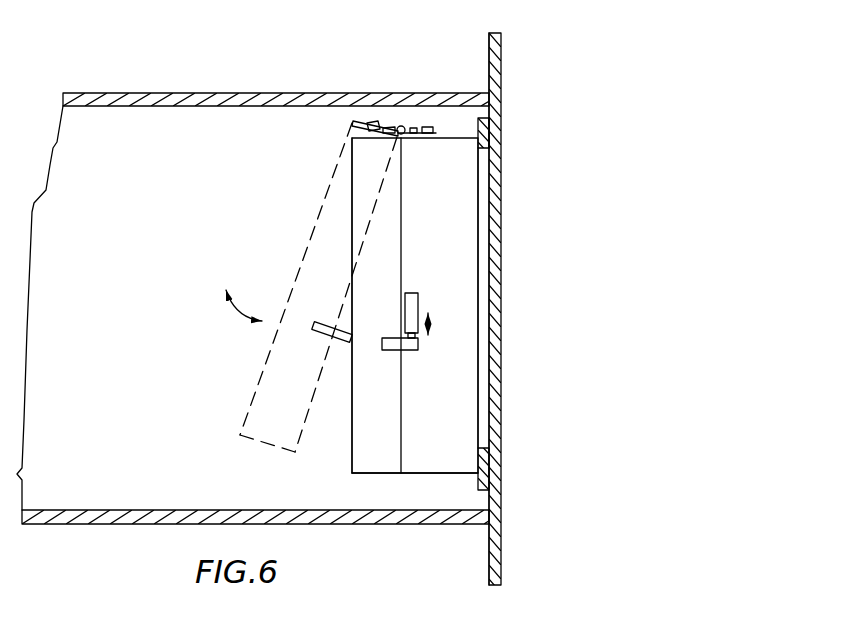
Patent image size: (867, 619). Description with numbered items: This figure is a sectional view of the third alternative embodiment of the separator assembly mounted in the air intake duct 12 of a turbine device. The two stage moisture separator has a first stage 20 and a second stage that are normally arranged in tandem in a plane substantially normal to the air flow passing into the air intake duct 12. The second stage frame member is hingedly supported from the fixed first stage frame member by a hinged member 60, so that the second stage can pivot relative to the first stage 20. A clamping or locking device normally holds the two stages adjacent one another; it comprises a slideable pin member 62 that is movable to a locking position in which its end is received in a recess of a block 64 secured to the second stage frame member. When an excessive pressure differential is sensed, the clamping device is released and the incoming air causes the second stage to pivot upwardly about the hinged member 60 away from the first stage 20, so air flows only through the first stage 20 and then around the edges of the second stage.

The air intake duct 12 is at (252, 92).
The first stage 20 is at (438, 450).
The hinged member 60 is at (415, 128).
The pin member 62 is at (410, 293).
The block 64 is at (405, 351).